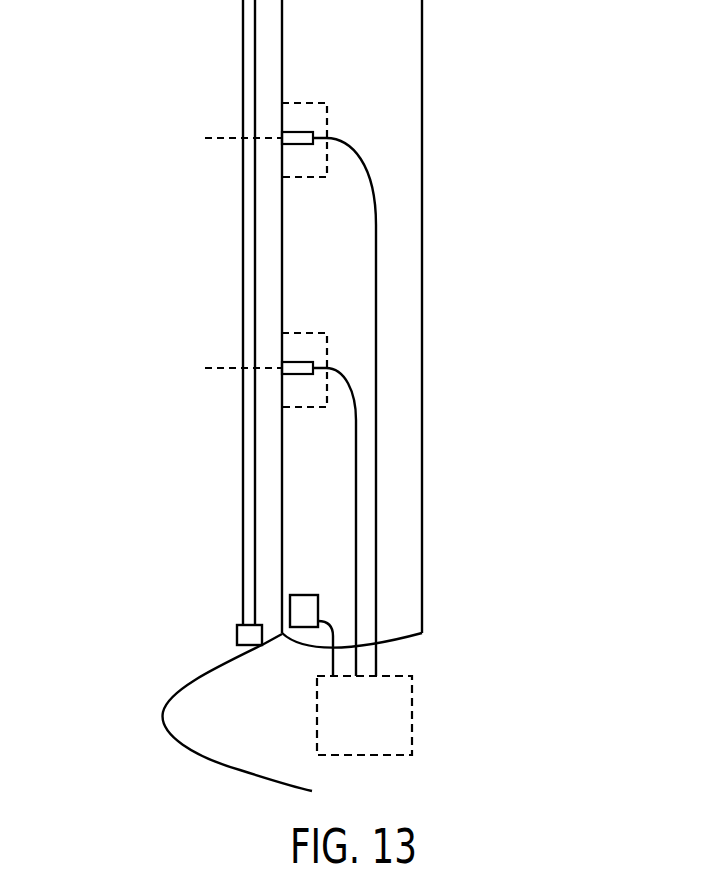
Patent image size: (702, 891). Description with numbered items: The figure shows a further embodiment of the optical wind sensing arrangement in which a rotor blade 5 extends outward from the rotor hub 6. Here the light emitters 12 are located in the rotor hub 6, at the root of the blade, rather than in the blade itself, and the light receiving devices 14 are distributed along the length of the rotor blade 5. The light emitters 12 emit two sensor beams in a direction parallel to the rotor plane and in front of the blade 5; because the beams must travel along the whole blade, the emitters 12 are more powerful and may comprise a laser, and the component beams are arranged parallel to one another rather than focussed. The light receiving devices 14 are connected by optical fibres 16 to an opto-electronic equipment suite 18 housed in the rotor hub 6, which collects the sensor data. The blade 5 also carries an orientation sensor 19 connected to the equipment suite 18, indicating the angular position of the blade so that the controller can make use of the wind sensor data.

The rotor blade 5 is at (407, 57).
The rotor hub 6 is at (182, 742).
The light emitter 12 is at (237, 635).
The light receiving device 14 is at (294, 152).
The optical fibre 16 is at (378, 485).
The opto-electronic equipment suite 18 is at (412, 715).
The orientation sensor 19 is at (295, 610).